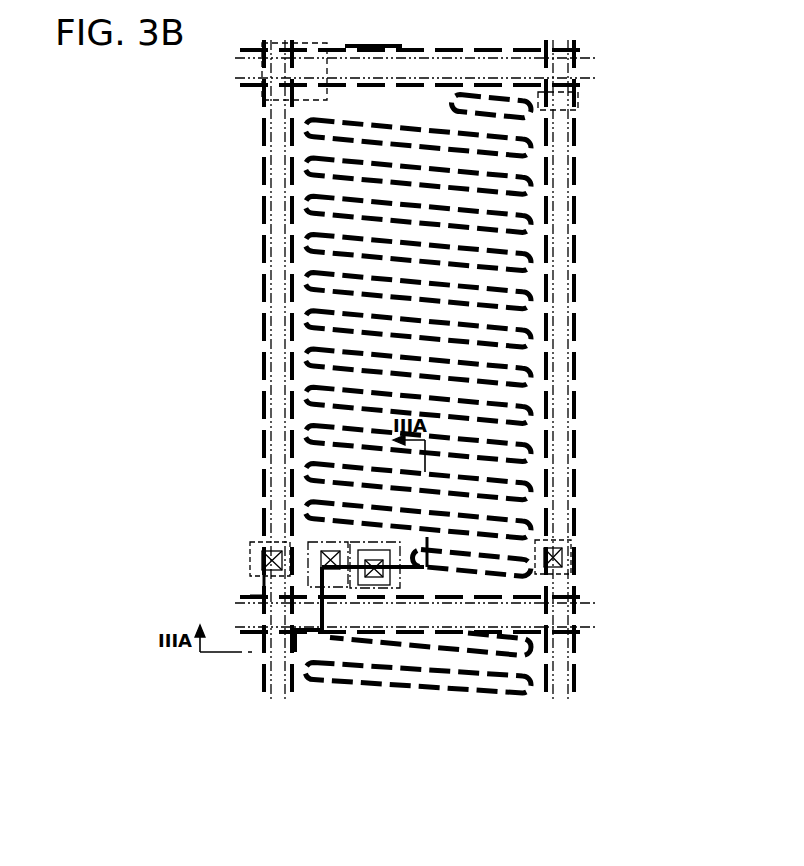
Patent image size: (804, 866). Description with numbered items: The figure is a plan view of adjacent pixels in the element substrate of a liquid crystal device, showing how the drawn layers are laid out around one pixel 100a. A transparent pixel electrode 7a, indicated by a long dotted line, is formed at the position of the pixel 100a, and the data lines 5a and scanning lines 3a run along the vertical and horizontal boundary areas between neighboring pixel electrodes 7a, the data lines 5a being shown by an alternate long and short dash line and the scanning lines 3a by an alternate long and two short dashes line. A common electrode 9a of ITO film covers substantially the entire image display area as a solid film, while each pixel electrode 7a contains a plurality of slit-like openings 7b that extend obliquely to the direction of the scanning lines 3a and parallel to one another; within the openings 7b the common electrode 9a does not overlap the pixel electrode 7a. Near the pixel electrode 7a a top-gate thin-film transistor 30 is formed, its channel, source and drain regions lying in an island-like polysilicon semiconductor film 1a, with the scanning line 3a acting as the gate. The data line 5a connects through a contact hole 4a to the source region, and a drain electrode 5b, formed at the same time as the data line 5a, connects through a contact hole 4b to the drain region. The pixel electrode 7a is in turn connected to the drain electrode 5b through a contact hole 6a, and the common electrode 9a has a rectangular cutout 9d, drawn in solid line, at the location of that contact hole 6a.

The data line 5a is at (293, 44).
The scanning line 3a is at (241, 50).
The pixel 100a is at (531, 122).
The pixel electrode 7a is at (304, 437).
The slit-like opening 7b is at (443, 470).
The common electrode 9a is at (527, 432).
The contact hole 4a is at (258, 558).
The contact hole 4b is at (330, 551).
The thin-film transistor 30 is at (342, 625).
The contact hole 6a is at (372, 580).
The drain electrode 5b is at (393, 603).
The rectangular cutout 9d is at (388, 572).
The semiconductor film 1a is at (303, 670).